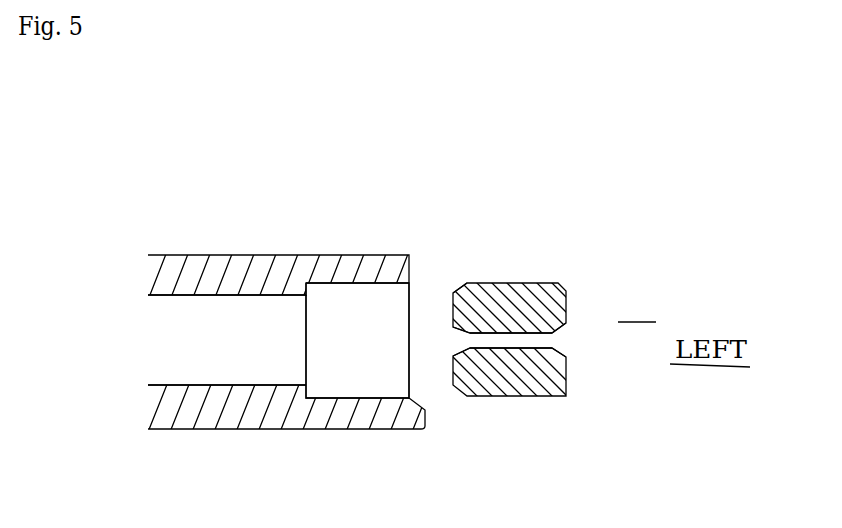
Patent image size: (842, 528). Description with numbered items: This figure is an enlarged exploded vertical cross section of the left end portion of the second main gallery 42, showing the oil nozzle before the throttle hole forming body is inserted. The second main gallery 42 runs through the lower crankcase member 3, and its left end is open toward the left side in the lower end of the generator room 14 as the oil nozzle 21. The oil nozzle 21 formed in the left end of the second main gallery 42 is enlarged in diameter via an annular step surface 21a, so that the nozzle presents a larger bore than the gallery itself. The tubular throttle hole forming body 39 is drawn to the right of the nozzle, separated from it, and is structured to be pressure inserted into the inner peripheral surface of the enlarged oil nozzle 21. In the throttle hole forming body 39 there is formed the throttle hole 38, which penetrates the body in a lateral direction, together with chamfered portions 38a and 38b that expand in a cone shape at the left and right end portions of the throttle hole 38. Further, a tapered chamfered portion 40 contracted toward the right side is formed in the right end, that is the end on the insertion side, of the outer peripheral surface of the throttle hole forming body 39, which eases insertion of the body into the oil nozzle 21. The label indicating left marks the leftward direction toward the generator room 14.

The lower crankcase member 3 is at (152, 408).
The second main gallery 42 is at (210, 360).
The oil nozzle 21 is at (352, 300).
The annular step surface 21a is at (305, 295).
The throttle hole forming body 39 is at (512, 285).
The tapered chamfered portion 40 is at (463, 287).
The throttle hole 38 is at (513, 348).
The chamfered portion 38a is at (462, 353).
The chamfered portion 38b is at (567, 343).
The generator room 14 is at (637, 309).